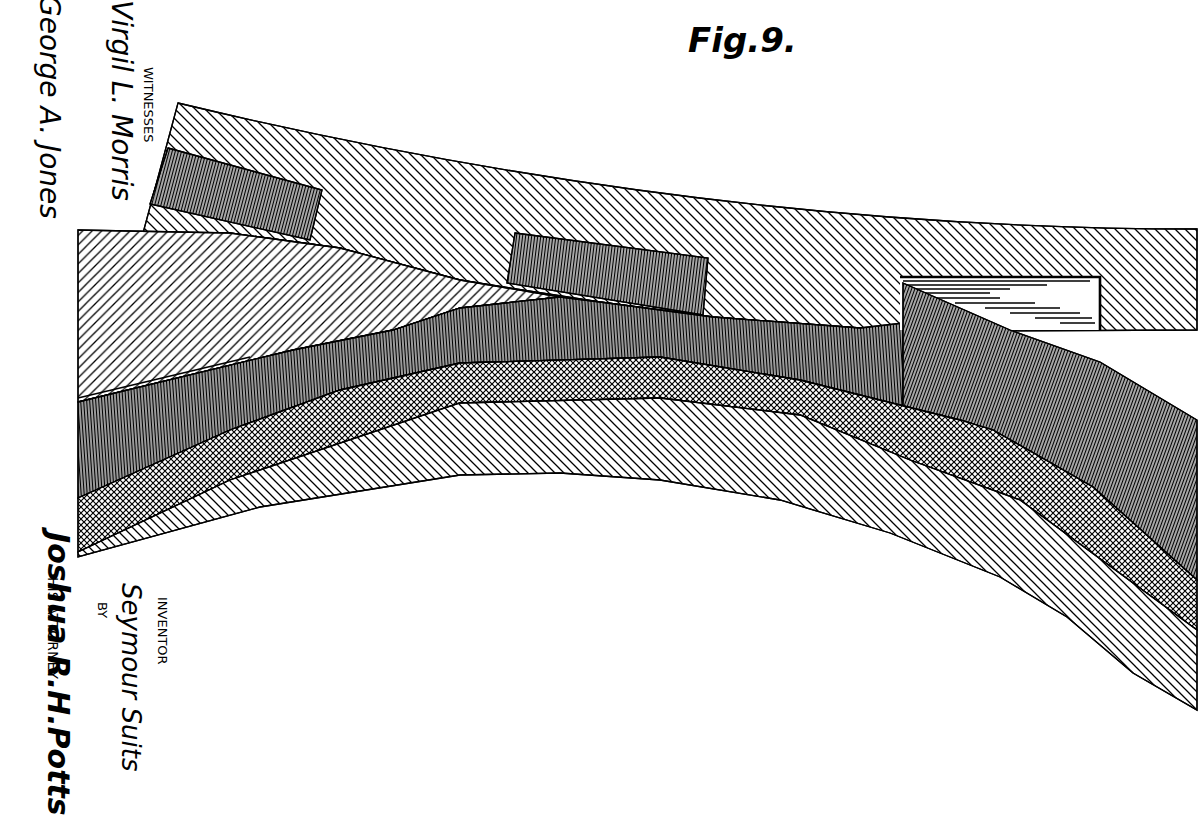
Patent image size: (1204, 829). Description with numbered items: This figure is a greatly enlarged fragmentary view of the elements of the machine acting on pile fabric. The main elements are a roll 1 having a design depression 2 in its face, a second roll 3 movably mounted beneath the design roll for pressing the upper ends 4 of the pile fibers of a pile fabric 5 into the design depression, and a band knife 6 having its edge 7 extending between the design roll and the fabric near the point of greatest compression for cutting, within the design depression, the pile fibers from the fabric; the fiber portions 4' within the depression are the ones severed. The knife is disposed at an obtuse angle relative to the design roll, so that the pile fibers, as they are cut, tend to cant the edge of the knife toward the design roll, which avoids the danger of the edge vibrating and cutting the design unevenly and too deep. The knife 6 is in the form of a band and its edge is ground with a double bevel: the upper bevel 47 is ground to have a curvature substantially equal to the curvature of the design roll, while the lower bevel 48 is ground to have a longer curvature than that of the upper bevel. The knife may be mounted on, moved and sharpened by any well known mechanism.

The roll 1 is at (780, 233).
The design depression 2 is at (572, 252).
The second roll 3 is at (618, 452).
The upper ends of the pile fibers 4 is at (613, 242).
The coil end portion 4' is at (1050, 431).
The pile fabric 5 is at (957, 469).
The band knife 6 is at (101, 233).
The edge 7 is at (522, 368).
The upper bevel 47 is at (395, 255).
The lower bevel 48 is at (250, 352).